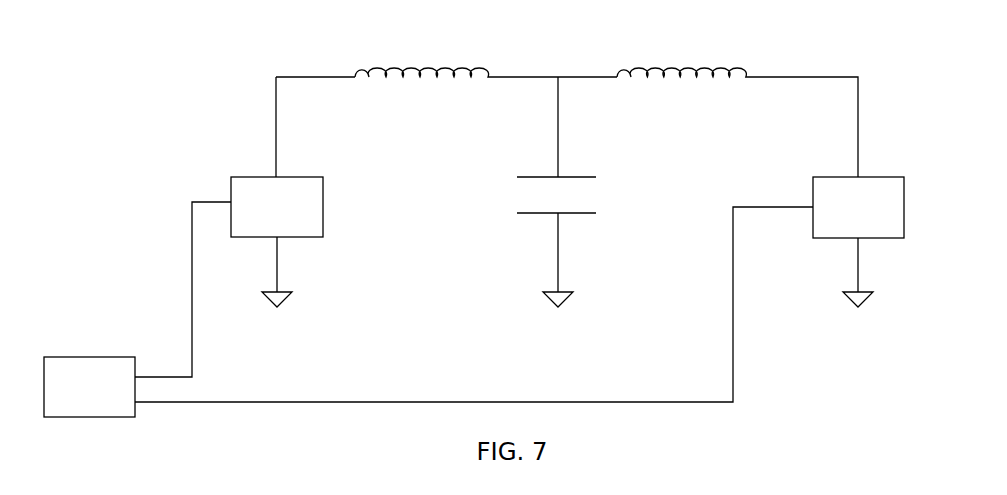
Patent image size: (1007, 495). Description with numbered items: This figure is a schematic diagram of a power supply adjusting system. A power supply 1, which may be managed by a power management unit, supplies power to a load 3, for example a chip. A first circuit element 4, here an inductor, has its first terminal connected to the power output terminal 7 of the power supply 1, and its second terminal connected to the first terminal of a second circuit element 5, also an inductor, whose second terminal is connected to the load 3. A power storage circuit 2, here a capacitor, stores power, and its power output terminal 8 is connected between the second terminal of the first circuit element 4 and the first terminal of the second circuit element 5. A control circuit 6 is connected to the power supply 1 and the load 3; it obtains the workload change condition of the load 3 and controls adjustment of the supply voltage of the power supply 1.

The power supply 1 is at (323, 207).
The power storage circuit 2 is at (582, 175).
The load 3 is at (904, 208).
The first circuit element 4 is at (405, 66).
The second circuit element 5 is at (680, 66).
The control circuit 6 is at (82, 357).
The power output terminal 7 is at (277, 160).
The power output terminal 8 is at (558, 165).